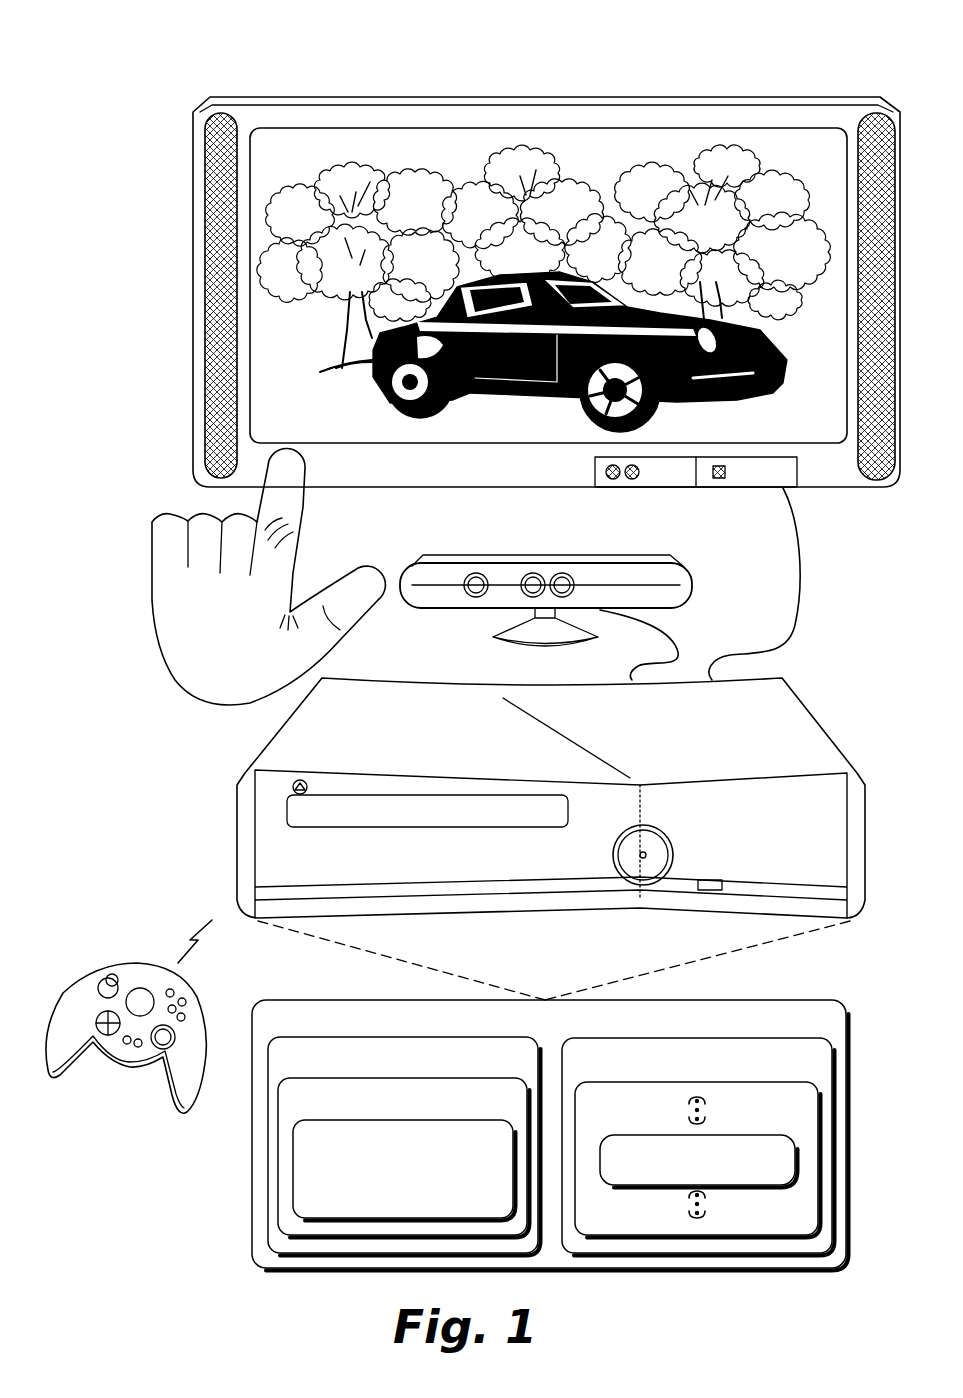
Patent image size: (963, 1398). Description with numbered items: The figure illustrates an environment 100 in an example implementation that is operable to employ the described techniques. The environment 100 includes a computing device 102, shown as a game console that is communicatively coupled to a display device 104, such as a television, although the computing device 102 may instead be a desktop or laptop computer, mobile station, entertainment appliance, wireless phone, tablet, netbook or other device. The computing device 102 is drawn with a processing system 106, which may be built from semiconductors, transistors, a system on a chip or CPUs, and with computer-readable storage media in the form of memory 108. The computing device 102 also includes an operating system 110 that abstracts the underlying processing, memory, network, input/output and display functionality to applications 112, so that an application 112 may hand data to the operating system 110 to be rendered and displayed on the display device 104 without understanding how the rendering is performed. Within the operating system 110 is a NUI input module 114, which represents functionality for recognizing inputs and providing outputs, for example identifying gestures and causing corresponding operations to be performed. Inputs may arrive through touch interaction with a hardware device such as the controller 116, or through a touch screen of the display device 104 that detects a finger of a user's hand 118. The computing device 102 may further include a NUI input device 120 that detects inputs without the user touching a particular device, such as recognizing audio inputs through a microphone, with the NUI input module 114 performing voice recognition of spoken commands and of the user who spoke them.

The environment 100 is at (157, 67).
The computing device 102 is at (660, 1032).
The display device 104 is at (300, 162).
The processing system 106 is at (520, 1066).
The memory 108 is at (758, 1069).
The operating system 110 is at (513, 1109).
The applications 112 is at (778, 1169).
The NUI input module 114 is at (460, 1192).
The controller 116 is at (118, 965).
The user's hand 118 is at (236, 664).
The NUI input device 120 is at (547, 553).